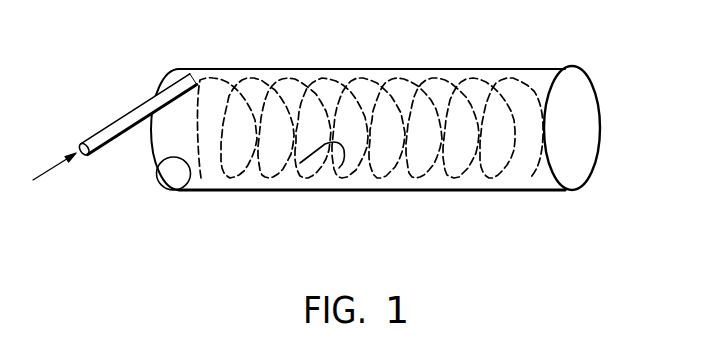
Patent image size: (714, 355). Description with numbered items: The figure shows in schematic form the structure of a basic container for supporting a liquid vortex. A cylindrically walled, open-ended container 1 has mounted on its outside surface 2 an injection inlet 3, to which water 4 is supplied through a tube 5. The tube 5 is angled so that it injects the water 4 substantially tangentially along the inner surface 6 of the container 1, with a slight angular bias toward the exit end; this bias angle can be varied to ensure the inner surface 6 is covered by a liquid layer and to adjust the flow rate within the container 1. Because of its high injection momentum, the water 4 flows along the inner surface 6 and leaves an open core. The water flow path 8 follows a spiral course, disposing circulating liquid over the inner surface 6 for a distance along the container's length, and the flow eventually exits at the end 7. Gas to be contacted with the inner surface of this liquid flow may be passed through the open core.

The container 1 is at (160, 85).
The outside surface 2 is at (336, 68).
The injection inlet 3 is at (191, 70).
The water 4 is at (40, 176).
The tube 5 is at (111, 139).
The inner surface 6 is at (196, 181).
The end 7 is at (594, 88).
The water flow path 8 is at (339, 170).